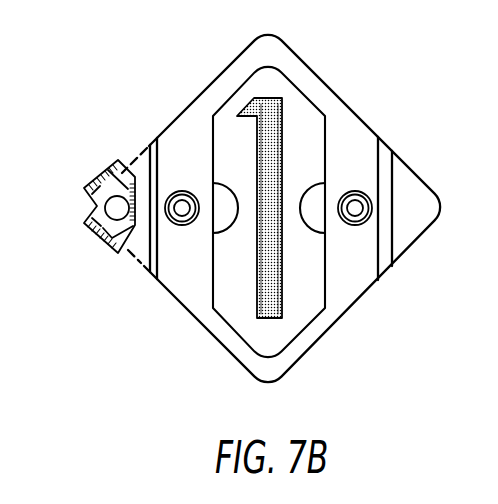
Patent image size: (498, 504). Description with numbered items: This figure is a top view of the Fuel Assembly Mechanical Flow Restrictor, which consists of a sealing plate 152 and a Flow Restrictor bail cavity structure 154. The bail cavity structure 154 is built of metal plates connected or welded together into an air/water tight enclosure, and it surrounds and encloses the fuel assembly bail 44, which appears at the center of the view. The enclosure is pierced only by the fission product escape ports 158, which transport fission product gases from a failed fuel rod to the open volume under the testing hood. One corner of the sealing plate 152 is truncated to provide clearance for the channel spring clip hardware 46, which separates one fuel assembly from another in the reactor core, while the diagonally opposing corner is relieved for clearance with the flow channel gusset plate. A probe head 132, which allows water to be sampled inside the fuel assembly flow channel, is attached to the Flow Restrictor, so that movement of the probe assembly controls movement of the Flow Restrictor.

The fuel assembly bail 44 is at (283, 133).
The channel spring clip hardware 46 is at (93, 238).
The probe head 132 is at (365, 190).
The sealing plate 152 is at (149, 173).
The Flow Restrictor bail cavity structure 154 is at (212, 136).
The fission product escape ports 158 is at (227, 212).